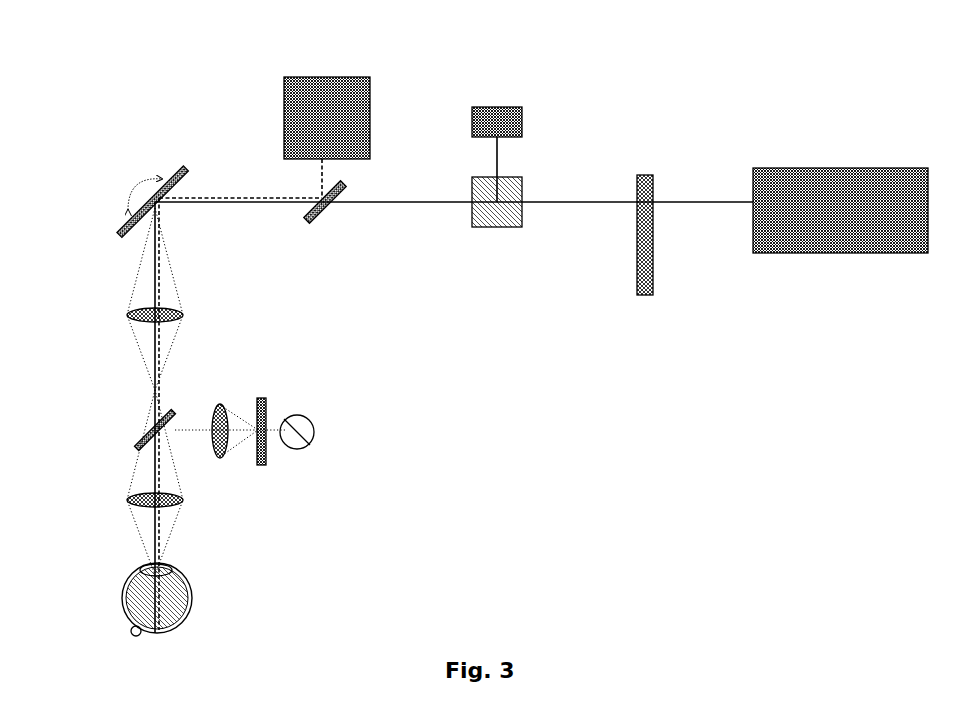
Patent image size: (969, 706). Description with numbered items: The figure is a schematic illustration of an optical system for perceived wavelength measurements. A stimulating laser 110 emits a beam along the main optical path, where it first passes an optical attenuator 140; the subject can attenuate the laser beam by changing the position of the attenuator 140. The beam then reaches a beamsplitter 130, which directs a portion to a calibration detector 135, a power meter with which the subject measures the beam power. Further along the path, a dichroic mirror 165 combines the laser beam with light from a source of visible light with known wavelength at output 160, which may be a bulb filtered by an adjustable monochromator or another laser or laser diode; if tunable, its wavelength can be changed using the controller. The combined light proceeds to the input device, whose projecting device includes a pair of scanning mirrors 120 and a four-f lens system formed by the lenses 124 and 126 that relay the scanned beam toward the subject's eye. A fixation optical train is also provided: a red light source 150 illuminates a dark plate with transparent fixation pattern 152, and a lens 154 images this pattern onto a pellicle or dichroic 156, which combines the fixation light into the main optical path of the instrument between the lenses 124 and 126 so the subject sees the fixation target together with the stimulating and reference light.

The stimulating laser 110 is at (840, 262).
The scanning mirrors 120 is at (118, 224).
The 4-f lens system lens 124 is at (120, 316).
The 4-f lens system lens 126 is at (120, 496).
The beamsplitter 130 is at (497, 232).
The calibration detector 135 is at (497, 104).
The optical attenuator 140 is at (627, 233).
The red light source 150 is at (313, 451).
The dark plate with transparent fixation pattern 152 is at (271, 403).
The lens 154 is at (232, 468).
The pellicle or dichroic 156 is at (140, 429).
The source of visible light with known wavelength 160 is at (322, 74).
The dichroic mirror 165 is at (338, 213).